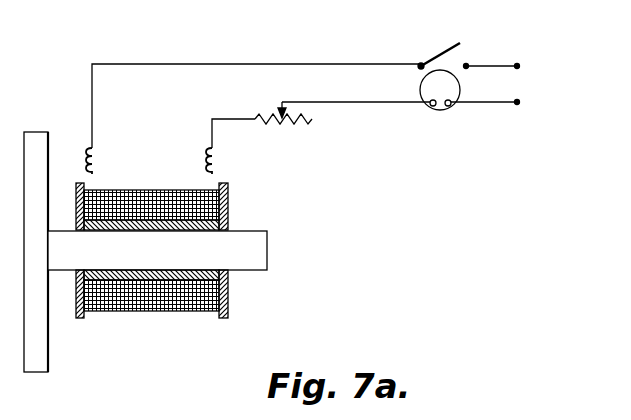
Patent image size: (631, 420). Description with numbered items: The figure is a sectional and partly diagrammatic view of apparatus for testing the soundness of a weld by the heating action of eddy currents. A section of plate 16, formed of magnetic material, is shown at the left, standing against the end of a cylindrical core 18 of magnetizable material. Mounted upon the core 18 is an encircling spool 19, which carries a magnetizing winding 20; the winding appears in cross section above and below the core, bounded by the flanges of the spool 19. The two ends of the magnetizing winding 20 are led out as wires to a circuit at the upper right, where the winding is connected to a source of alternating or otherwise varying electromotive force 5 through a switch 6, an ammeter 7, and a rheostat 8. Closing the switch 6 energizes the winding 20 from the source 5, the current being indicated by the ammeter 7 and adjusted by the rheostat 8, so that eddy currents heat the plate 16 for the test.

The source of alternating or otherwise varying electromotive force 5 is at (517, 90).
The switch 6 is at (432, 57).
The ammeter 7 is at (437, 110).
The rheostat 8 is at (288, 124).
The section of plate 16 is at (45, 132).
The cylindrical core 18 is at (267, 240).
The encircling spool 19 is at (228, 194).
The magnetizing winding 20 is at (190, 318).